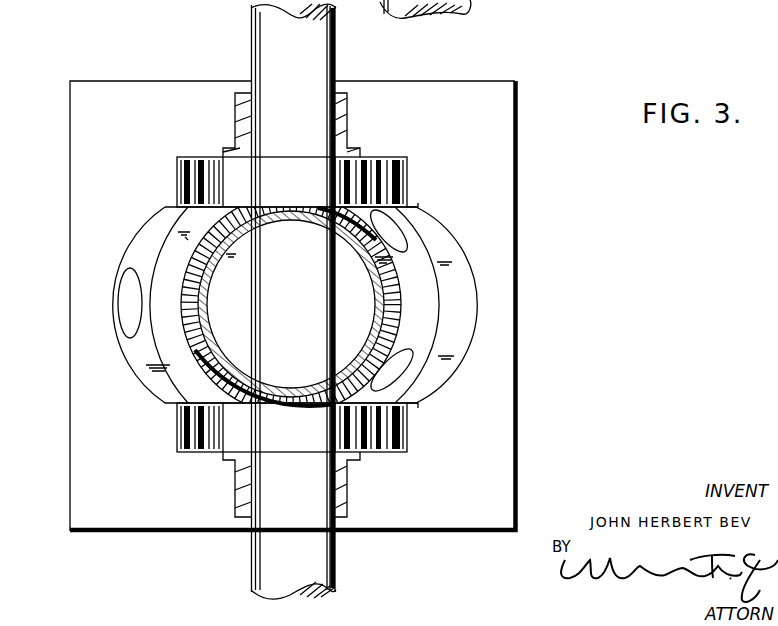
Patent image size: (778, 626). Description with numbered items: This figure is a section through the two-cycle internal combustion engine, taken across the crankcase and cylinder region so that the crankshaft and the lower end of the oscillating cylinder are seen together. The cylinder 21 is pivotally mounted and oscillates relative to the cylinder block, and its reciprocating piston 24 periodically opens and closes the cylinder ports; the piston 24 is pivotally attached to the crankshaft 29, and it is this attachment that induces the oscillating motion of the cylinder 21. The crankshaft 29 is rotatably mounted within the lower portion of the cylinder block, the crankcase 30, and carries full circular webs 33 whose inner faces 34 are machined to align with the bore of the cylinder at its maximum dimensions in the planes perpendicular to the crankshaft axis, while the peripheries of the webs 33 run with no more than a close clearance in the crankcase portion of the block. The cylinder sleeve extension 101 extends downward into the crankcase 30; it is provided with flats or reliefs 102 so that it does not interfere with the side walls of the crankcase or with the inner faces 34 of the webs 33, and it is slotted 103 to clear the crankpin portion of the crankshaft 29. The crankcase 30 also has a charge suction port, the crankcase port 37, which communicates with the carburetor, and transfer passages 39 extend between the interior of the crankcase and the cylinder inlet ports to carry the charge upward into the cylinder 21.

The cylinder 21 is at (400, 267).
The piston 24 is at (353, 293).
The crankshaft 29 is at (253, 563).
The crankcase 30 is at (518, 478).
The crankshaft webs 33 is at (410, 172).
The inner faces of the webs 34 is at (182, 233).
The crankcase port 37 is at (128, 306).
The transfer passages 39 is at (400, 230).
The cylinder sleeve extension 101 is at (408, 207).
The flats or reliefs 102 is at (340, 176).
The slot 103 is at (337, 82).